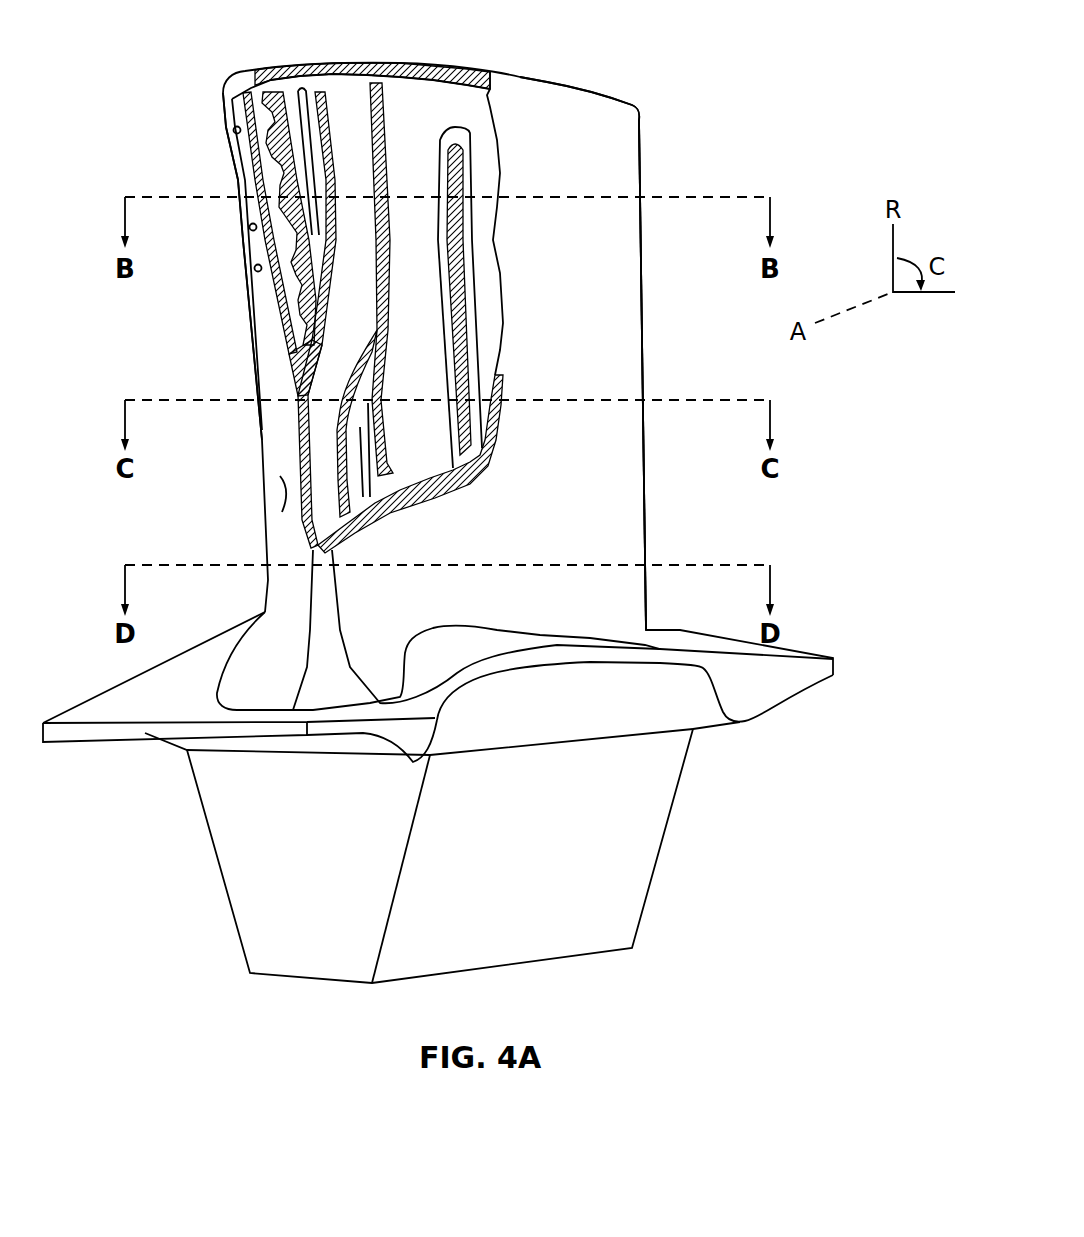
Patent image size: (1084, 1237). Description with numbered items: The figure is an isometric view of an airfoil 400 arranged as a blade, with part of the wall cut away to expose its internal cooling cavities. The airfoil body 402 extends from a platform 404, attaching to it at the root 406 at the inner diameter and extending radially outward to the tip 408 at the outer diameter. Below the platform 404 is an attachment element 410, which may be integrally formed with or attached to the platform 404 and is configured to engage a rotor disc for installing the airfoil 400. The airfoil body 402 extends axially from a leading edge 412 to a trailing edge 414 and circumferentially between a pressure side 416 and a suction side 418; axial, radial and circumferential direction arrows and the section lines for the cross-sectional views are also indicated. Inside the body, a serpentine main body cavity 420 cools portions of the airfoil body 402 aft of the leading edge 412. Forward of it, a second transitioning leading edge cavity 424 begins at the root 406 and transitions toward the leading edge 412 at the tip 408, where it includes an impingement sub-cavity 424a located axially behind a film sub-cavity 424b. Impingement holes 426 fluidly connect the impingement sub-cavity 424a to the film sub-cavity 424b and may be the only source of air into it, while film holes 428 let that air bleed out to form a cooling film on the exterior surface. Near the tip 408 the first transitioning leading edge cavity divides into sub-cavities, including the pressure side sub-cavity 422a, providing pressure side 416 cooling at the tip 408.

The airfoil 400 is at (730, 75).
The airfoil body 402 is at (553, 120).
The platform 404 is at (843, 666).
The root 406 is at (148, 697).
The tip 408 is at (206, 77).
The attachment element 410 is at (646, 877).
The leading edge 412 is at (310, 622).
The trailing edge 414 is at (643, 312).
The pressure side 416 is at (576, 516).
The suction side 418 is at (278, 490).
The main body cavity 420 is at (428, 109).
The pressure side sub-cavity 422a is at (349, 104).
The second transitioning leading edge cavity 424 is at (356, 494).
The impingement sub-cavity 424a is at (292, 112).
The film sub-cavity 424b is at (258, 137).
The impingement holes 426 is at (252, 268).
The film holes 428 is at (253, 281).